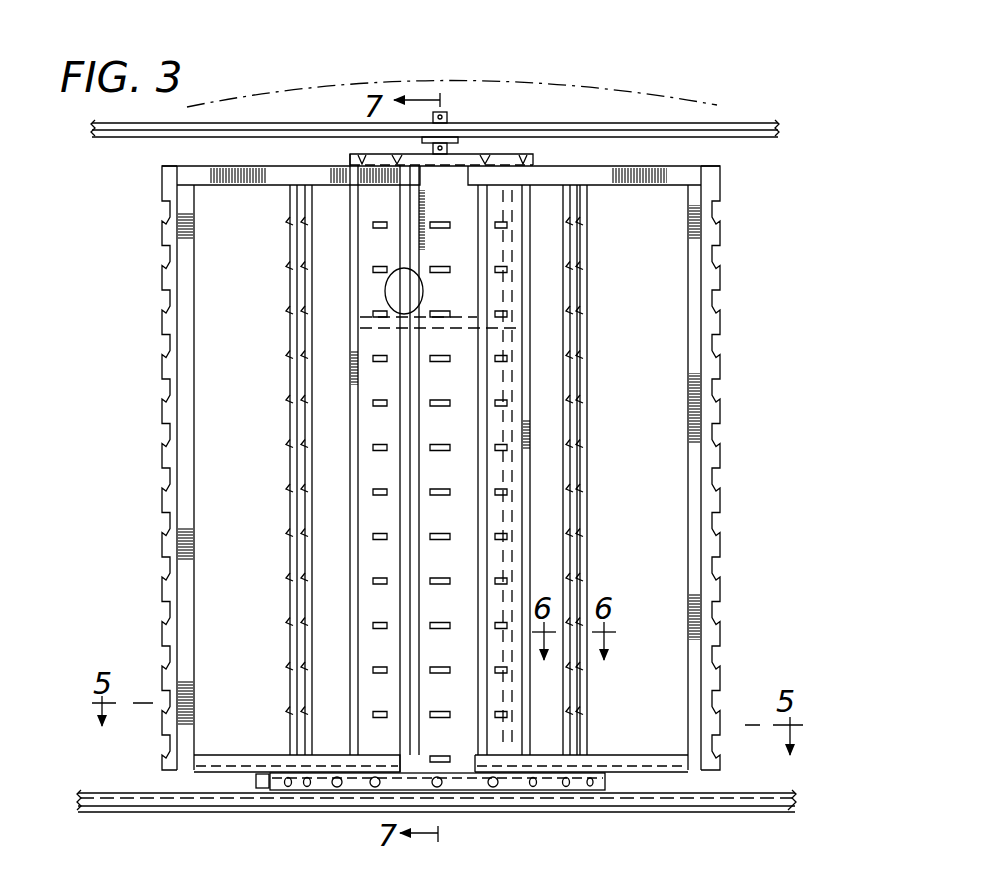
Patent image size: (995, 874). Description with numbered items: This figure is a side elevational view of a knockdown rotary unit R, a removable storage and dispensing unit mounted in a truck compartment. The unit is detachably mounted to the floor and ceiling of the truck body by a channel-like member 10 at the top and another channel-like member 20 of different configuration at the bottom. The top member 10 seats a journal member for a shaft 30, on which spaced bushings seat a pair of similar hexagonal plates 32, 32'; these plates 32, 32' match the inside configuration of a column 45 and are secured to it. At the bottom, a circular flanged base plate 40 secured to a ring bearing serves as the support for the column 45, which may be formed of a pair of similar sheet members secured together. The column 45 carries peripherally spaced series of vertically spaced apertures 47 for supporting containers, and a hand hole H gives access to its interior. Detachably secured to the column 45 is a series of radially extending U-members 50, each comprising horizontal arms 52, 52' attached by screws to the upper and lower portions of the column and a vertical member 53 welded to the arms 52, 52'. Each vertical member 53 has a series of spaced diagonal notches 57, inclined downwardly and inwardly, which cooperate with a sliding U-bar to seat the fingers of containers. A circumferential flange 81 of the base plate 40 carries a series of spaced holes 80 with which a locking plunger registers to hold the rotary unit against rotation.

The knockdown rotary unit R is at (113, 301).
The channel-like member 10 is at (735, 123).
The channel-like member 20 is at (95, 793).
The shaft 30 is at (447, 150).
The polygonal plate 32 is at (441, 179).
The polygonal plate 32' is at (441, 338).
The flanged base plate 40 is at (596, 772).
The column 45 is at (347, 423).
The container supporting means 47 is at (500, 406).
The U-member 50 is at (192, 164).
The horizontal arm 52 is at (439, 198).
The horizontal arm 52' is at (441, 731).
The vertical member 53 is at (290, 283).
The diagonal notches 57 is at (290, 484).
The holes 80 is at (567, 788).
The circumferential flange 81 is at (268, 775).
The hand hole H is at (456, 305).